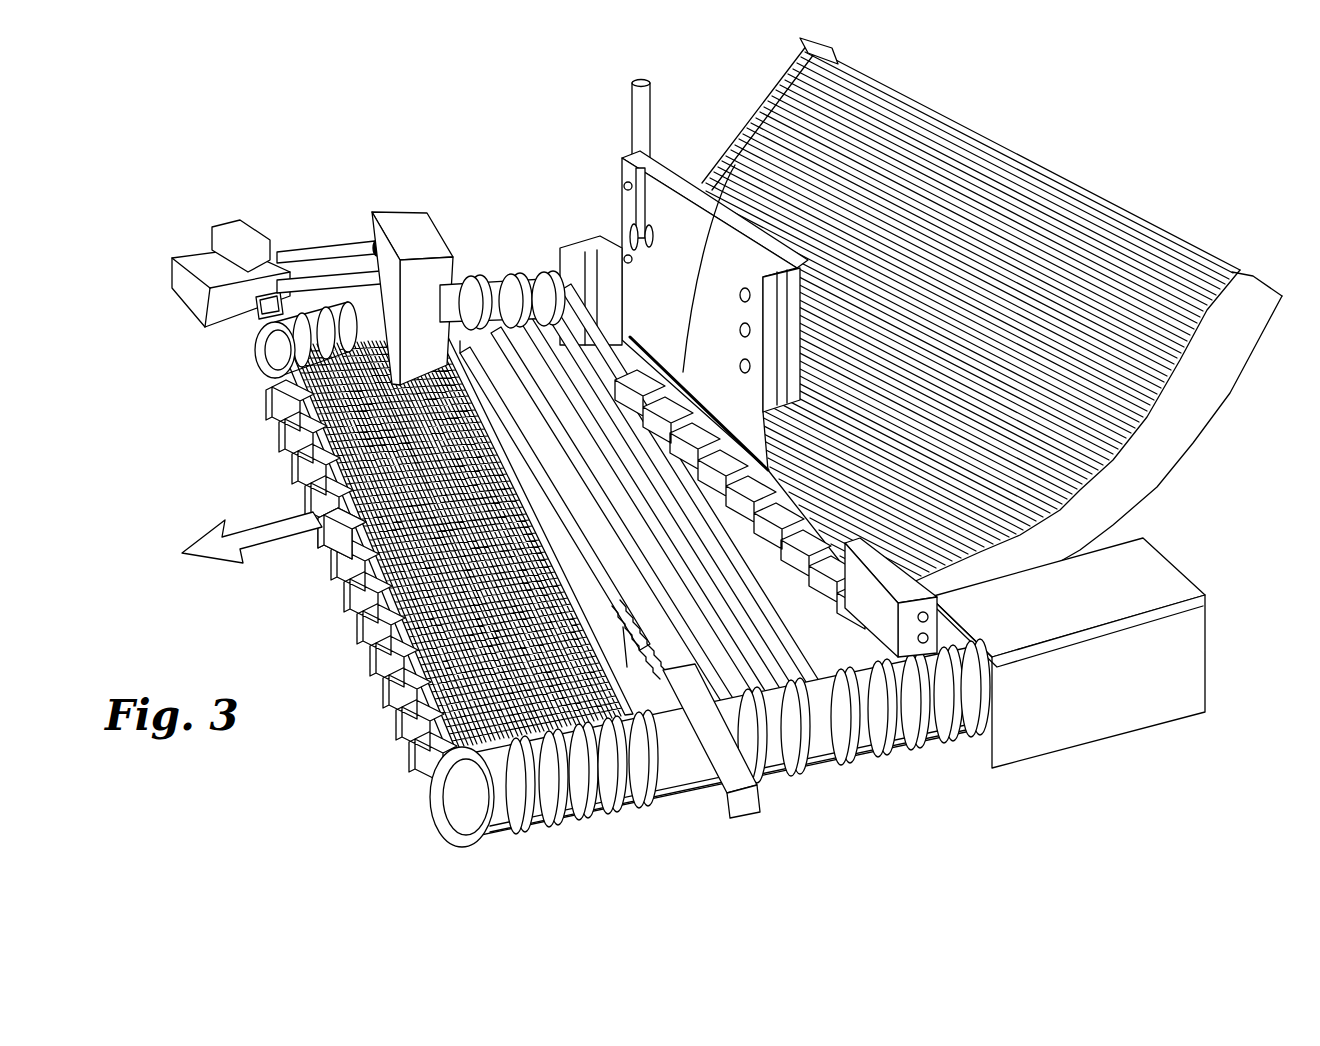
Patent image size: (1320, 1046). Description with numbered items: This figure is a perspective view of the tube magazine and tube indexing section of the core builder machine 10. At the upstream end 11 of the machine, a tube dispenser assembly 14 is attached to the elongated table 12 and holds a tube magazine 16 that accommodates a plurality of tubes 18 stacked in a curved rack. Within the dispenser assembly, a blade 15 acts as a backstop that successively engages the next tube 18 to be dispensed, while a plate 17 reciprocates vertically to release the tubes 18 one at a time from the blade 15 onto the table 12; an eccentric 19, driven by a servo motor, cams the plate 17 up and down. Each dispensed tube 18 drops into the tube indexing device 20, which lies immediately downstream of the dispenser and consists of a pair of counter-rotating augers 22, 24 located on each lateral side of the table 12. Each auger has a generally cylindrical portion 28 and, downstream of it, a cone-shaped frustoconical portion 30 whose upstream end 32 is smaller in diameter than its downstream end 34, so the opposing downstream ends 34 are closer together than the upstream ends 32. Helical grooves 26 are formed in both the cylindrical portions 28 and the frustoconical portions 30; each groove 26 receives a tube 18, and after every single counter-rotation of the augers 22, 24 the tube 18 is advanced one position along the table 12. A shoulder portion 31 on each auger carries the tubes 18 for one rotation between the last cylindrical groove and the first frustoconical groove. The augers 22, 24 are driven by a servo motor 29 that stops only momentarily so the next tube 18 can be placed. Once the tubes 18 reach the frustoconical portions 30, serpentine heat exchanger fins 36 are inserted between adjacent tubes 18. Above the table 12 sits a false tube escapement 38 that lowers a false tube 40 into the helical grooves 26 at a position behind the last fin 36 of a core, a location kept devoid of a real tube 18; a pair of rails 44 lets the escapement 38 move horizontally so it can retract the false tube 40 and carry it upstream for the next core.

The core builder machine 10 is at (478, 118).
The upstream end 11 is at (1190, 512).
The elongated table 12 is at (380, 728).
The tube dispenser assembly 14 is at (684, 158).
The blade 15 is at (735, 165).
The tube magazine 16 is at (1200, 432).
The plate 17 is at (792, 347).
The tube 18 is at (1095, 232).
The eccentric 19 is at (626, 236).
The tube indexing device 20 is at (278, 480).
The auger 22 is at (871, 574).
The auger 24 is at (568, 250).
The helical groove 26 is at (518, 258).
The cylindrical portion 28 is at (473, 258).
The servo motor 29 is at (1150, 715).
The frustoconical portion 30 is at (307, 258).
The shoulder portion 31 is at (707, 770).
The upstream end 32 is at (355, 291).
The downstream end 34 is at (250, 352).
The serpentine heat exchanger fin 36 is at (380, 573).
The false tube escapement 38 is at (412, 232).
The false tube 40 is at (634, 794).
The rails 44 is at (318, 300).